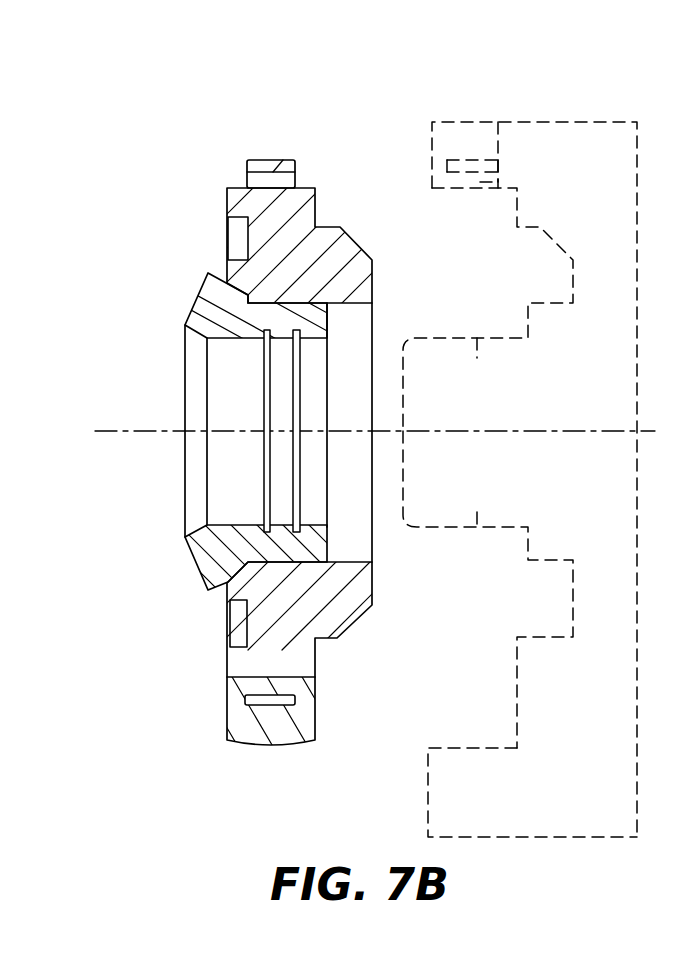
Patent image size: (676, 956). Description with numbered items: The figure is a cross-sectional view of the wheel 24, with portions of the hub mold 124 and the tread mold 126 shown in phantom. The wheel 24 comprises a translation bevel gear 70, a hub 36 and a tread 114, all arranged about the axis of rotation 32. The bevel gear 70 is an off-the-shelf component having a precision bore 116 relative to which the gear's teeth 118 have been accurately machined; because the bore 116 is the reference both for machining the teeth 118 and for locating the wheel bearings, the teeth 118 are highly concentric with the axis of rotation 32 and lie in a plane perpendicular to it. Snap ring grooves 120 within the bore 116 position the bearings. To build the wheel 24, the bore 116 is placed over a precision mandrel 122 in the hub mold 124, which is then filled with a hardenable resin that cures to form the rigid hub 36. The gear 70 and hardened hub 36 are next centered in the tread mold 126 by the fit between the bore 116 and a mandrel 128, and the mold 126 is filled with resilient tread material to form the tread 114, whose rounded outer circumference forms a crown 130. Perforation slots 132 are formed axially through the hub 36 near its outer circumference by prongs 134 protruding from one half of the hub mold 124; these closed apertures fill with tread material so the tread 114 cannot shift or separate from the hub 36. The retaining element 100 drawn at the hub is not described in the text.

The wheel 24 is at (283, 103).
The axis of rotation 32 is at (115, 427).
The hub 36 is at (354, 240).
The translation bevel gear 70 is at (135, 462).
The retaining key 100 is at (227, 617).
The tread 114 is at (237, 725).
The precision bore 116 is at (236, 339).
The teeth 118 is at (193, 563).
The snap ring grooves 120 is at (270, 373).
The precision mandrel 122 is at (479, 332).
The hub mold 124 is at (514, 122).
The tread mold 126 is at (503, 838).
The mandrel 128 is at (478, 537).
The crown 130 is at (237, 743).
The perforation slots 132 is at (247, 176).
The prongs 134 is at (513, 172).